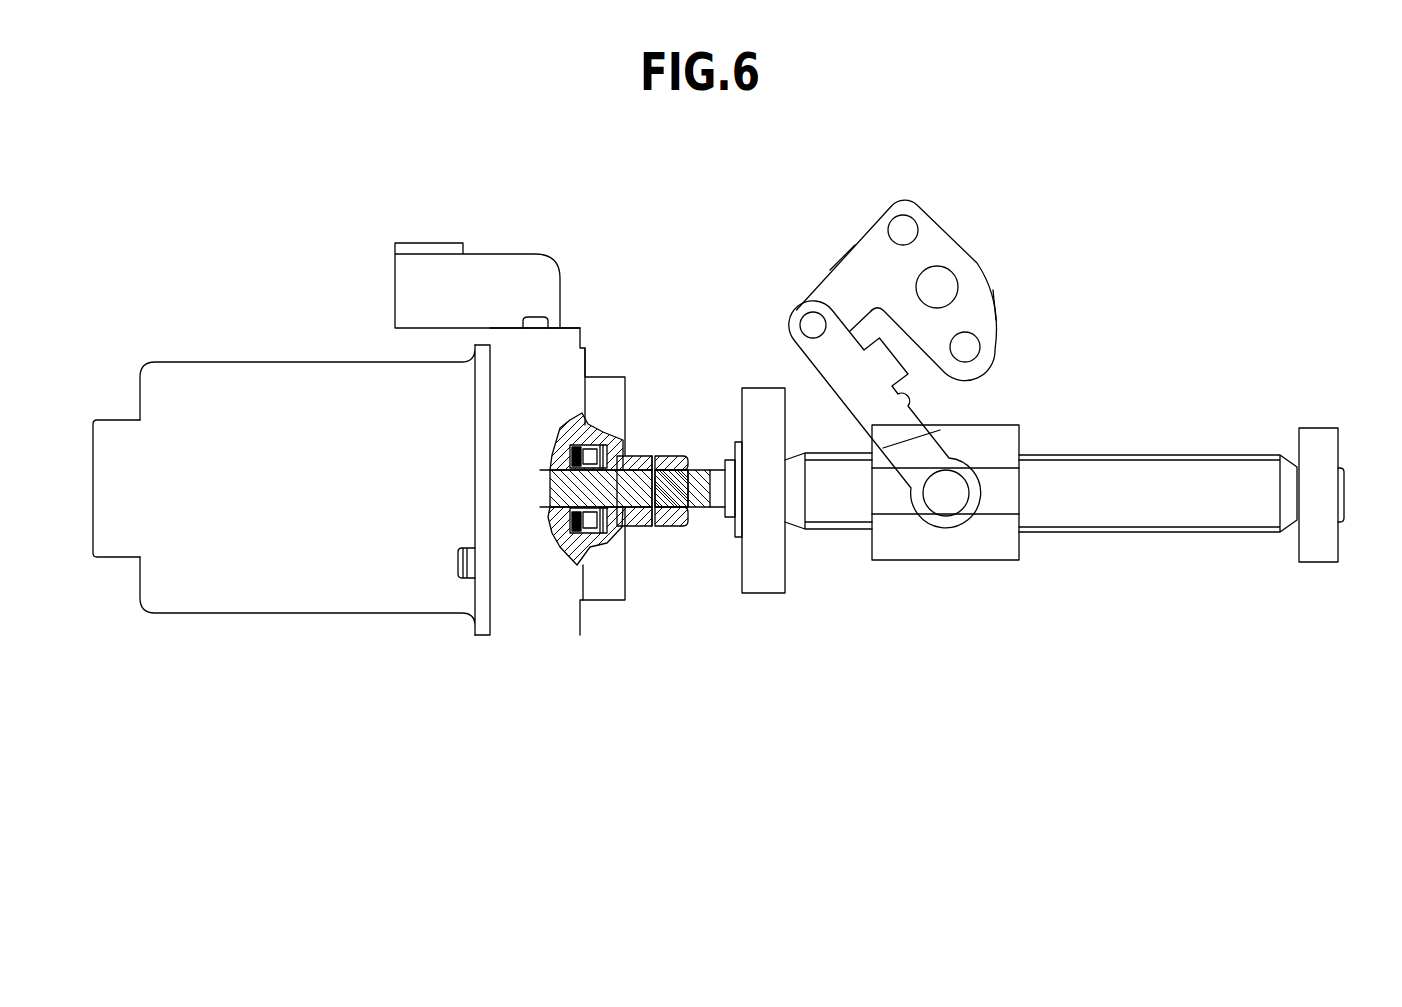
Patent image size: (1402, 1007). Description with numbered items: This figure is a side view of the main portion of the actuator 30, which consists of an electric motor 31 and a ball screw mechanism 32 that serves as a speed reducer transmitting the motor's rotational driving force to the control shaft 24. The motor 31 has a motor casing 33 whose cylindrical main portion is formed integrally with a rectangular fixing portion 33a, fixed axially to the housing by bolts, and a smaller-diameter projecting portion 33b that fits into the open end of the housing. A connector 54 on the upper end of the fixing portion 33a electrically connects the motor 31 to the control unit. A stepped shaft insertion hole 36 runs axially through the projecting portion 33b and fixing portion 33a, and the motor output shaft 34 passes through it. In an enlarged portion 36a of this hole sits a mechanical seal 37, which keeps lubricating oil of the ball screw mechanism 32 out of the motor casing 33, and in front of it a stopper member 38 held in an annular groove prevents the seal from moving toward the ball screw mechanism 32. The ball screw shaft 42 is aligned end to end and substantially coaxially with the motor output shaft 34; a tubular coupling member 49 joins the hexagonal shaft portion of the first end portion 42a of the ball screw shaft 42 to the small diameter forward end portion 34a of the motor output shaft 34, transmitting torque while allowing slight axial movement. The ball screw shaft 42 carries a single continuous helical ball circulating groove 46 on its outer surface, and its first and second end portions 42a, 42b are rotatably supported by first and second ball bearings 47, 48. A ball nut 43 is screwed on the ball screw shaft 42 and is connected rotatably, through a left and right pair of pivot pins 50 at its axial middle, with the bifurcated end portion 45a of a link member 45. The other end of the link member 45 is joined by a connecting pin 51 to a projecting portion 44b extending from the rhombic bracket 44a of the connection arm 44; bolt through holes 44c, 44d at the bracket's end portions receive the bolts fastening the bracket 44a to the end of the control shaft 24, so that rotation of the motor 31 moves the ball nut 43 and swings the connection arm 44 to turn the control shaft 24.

The actuator 30 is at (668, 303).
The electric motor 31 is at (313, 612).
The ball screw mechanism 32 is at (923, 563).
The motor casing 33 is at (204, 597).
The fixing portion 33a is at (503, 620).
The projecting portion 33b is at (600, 598).
The motor output shaft 34 is at (628, 493).
The small diameter forward end portion 34a is at (643, 477).
The stepped shaft insertion hole 36 is at (555, 505).
The enlarged portion 36a is at (595, 453).
The mechanical seal 37 is at (577, 535).
The stopper member 38 is at (607, 528).
The ball screw shaft 42 is at (1097, 510).
The first end portion 42a is at (698, 492).
The second end portion 42b is at (1345, 488).
The ball nut 43 is at (885, 548).
The connection arm 44 is at (942, 246).
The rhombic bracket 44a is at (985, 303).
The projecting portion 44b is at (838, 282).
The bolt through hole 44c is at (905, 217).
The bolt through hole 44d is at (970, 352).
The control shaft 24 is at (937, 290).
The link member 45 is at (880, 378).
The bifurcated end portion 45a is at (920, 440).
The ball circulating groove 46 is at (1188, 533).
The first ball bearing 47 is at (758, 580).
The second ball bearing 48 is at (1315, 440).
The tubular coupling member 49 is at (678, 462).
The pivot pins 50 is at (946, 498).
The connecting pin 51 is at (808, 322).
The connector 54 is at (430, 268).